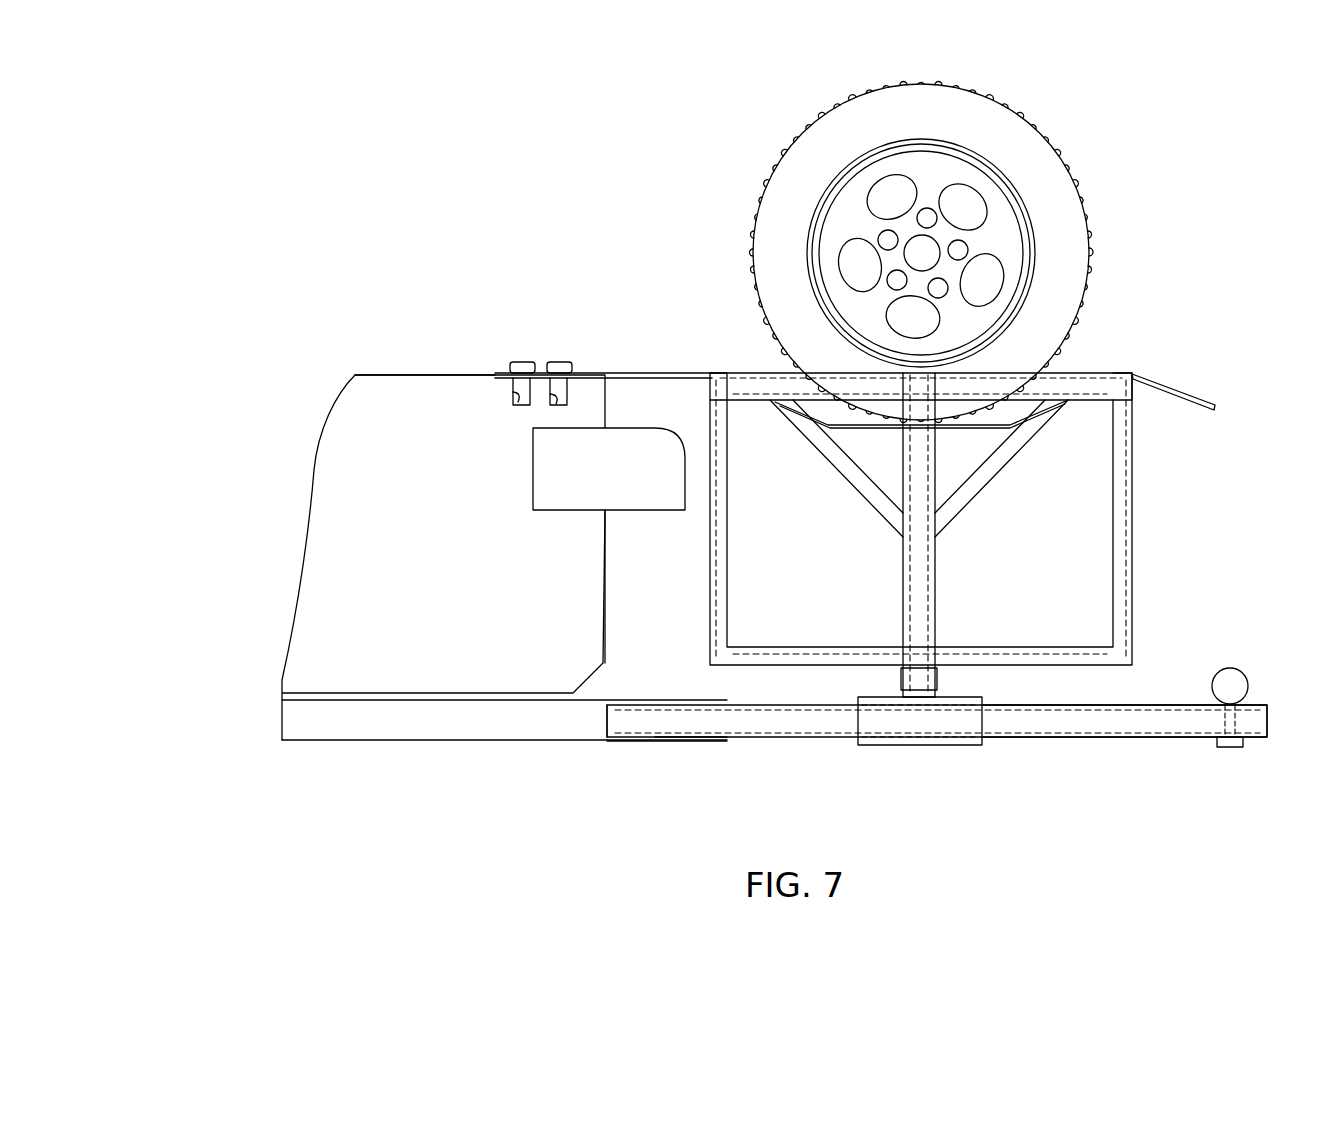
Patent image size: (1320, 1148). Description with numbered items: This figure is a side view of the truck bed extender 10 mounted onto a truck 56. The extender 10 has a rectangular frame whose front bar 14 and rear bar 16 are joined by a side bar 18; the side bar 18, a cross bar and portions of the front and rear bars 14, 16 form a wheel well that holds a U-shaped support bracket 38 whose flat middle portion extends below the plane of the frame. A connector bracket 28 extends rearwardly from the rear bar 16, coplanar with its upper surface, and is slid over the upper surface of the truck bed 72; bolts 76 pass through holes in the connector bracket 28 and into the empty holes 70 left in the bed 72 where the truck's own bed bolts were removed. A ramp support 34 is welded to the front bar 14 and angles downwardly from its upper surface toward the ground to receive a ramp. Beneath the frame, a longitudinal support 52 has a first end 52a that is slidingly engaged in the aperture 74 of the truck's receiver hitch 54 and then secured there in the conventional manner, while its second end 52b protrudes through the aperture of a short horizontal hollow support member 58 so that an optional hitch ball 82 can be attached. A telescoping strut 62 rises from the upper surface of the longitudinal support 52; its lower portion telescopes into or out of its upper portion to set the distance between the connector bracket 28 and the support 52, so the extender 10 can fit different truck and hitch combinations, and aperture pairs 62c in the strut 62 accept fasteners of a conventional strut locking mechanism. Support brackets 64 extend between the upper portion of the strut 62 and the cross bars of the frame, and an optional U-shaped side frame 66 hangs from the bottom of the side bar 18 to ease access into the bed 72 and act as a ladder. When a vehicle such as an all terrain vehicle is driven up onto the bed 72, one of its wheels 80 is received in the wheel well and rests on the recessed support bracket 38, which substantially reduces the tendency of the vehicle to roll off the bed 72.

The truck bed extender 10 is at (1204, 512).
The front bar 14 is at (1118, 385).
The rear bar 16 is at (723, 388).
The side bar 18 is at (742, 400).
The connector bracket 28 is at (638, 362).
The ramp support 34 is at (1172, 386).
The support bracket 38 is at (996, 433).
The longitudinal support 52 is at (790, 720).
The first end of longitudinal support 52a is at (625, 722).
The second end of longitudinal support 52b is at (1100, 720).
The receiver hitch 54 is at (515, 722).
The truck 56 is at (415, 608).
The horizontal hollow support member 58 is at (920, 745).
The telescoping strut 62 is at (948, 581).
The aperture pairs 62c is at (900, 658).
The support brackets 64 is at (862, 478).
The U-shaped side frame 66 is at (710, 600).
The holes 70 is at (515, 395).
The bed 72 is at (398, 375).
The aperture 74 is at (665, 722).
The bolts 76 is at (555, 362).
The wheels 80 is at (1088, 270).
The hitch ball 82 is at (1232, 685).